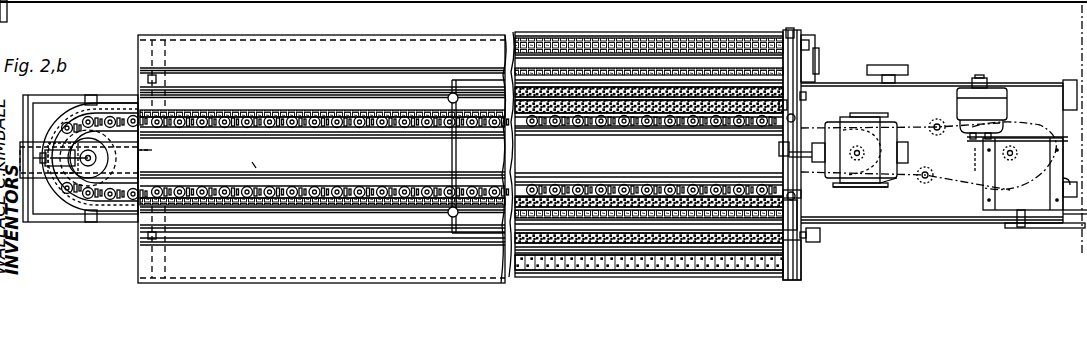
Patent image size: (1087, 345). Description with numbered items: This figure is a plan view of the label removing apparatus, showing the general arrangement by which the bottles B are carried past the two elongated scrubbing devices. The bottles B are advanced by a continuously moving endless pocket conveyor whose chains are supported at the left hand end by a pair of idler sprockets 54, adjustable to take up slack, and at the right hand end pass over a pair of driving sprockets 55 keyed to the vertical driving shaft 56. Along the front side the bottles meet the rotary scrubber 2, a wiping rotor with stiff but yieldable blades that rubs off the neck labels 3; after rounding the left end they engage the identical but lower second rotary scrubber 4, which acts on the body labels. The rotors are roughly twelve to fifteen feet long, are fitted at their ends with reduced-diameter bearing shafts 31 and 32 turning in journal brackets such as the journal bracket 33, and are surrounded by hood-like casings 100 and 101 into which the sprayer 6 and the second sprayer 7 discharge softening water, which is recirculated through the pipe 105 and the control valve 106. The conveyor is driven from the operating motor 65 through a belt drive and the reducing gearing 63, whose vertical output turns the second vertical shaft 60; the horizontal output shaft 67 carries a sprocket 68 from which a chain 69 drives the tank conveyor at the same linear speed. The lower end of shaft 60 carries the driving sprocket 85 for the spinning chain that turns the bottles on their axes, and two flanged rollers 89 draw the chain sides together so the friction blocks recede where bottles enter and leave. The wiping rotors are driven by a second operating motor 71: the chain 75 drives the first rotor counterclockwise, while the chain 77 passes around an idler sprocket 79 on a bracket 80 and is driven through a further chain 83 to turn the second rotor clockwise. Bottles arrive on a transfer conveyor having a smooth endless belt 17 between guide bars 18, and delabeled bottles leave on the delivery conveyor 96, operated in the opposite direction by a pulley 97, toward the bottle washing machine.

The rotary scrubber 2 is at (637, 235).
The neck labels 3 is at (423, 0).
The second rotary scrubber 4 is at (537, 80).
The sprayer 6 is at (352, 236).
The second sprayer 7 is at (360, 78).
The endless belt 17 is at (1063, 192).
The guide bars 18 is at (1060, 180).
The bearing shaft 31 is at (813, 76).
The bearing shaft 32 is at (820, 237).
The journal bracket 33 is at (803, 245).
The idler sprockets 54 is at (157, 154).
The driving sprockets 55 is at (848, 188).
The vertical driving shaft 56 is at (857, 140).
The second vertical shaft 60 is at (1030, 135).
The reducing gearing 63 is at (1005, 210).
The operating motor 65 is at (990, 91).
The horizontal output shaft 67 is at (1020, 230).
The sprocket 68 is at (1031, 230).
The chain 69 is at (1058, 230).
The second operating motor 71 is at (890, 183).
The chain 75 is at (795, 207).
The chain 77 is at (803, 97).
The idler sprocket 79 is at (792, 32).
The bracket 80 is at (814, 46).
The chain 83 is at (788, 143).
The driving sprocket 85 is at (972, 155).
The flanged rollers 89 is at (937, 119).
The delivery conveyor 96 is at (1073, 80).
The pulley 97 is at (896, 66).
The hood-like casing 100 is at (680, 280).
The hood-like casing 101 is at (724, 36).
The pipe 105 is at (256, 162).
The control valve 106 is at (459, 97).
The bottles B is at (82, 203).